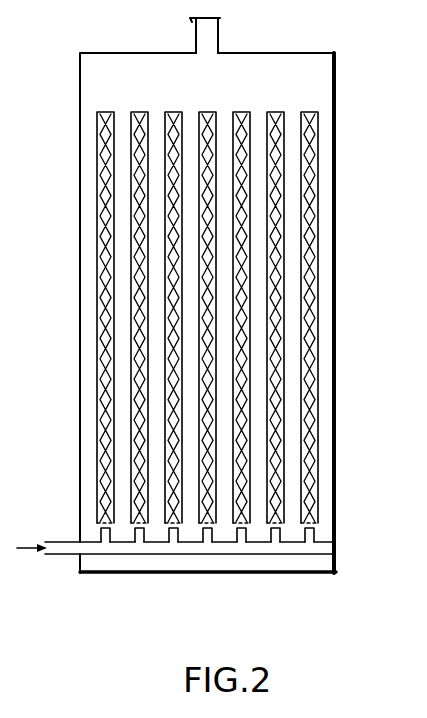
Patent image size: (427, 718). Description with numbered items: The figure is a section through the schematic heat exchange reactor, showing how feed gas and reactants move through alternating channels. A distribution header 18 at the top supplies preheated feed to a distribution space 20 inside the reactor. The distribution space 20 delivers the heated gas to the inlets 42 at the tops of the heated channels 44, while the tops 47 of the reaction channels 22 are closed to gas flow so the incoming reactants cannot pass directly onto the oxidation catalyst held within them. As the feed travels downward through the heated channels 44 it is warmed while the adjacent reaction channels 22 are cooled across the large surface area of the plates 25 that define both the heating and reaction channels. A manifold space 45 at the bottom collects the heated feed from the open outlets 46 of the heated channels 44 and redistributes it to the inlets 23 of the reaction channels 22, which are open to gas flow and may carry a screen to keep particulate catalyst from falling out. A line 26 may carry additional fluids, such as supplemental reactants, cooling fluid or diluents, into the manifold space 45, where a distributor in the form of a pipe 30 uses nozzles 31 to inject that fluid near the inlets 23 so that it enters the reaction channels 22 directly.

The distribution header 18 is at (219, 33).
The distribution space 20 is at (188, 88).
The reaction channels 22 is at (270, 468).
The inlets of reaction channels 23 is at (101, 526).
The plates 25 is at (283, 175).
The line 26 is at (28, 548).
The pipe 30 is at (257, 518).
The nozzles 31 is at (232, 608).
The inlets of heated channels 42 is at (260, 113).
The heated channels 44 is at (153, 342).
The manifold space 45 is at (110, 562).
The outlets of heated channels 46 is at (158, 520).
The tops of reaction channels 47 is at (310, 112).